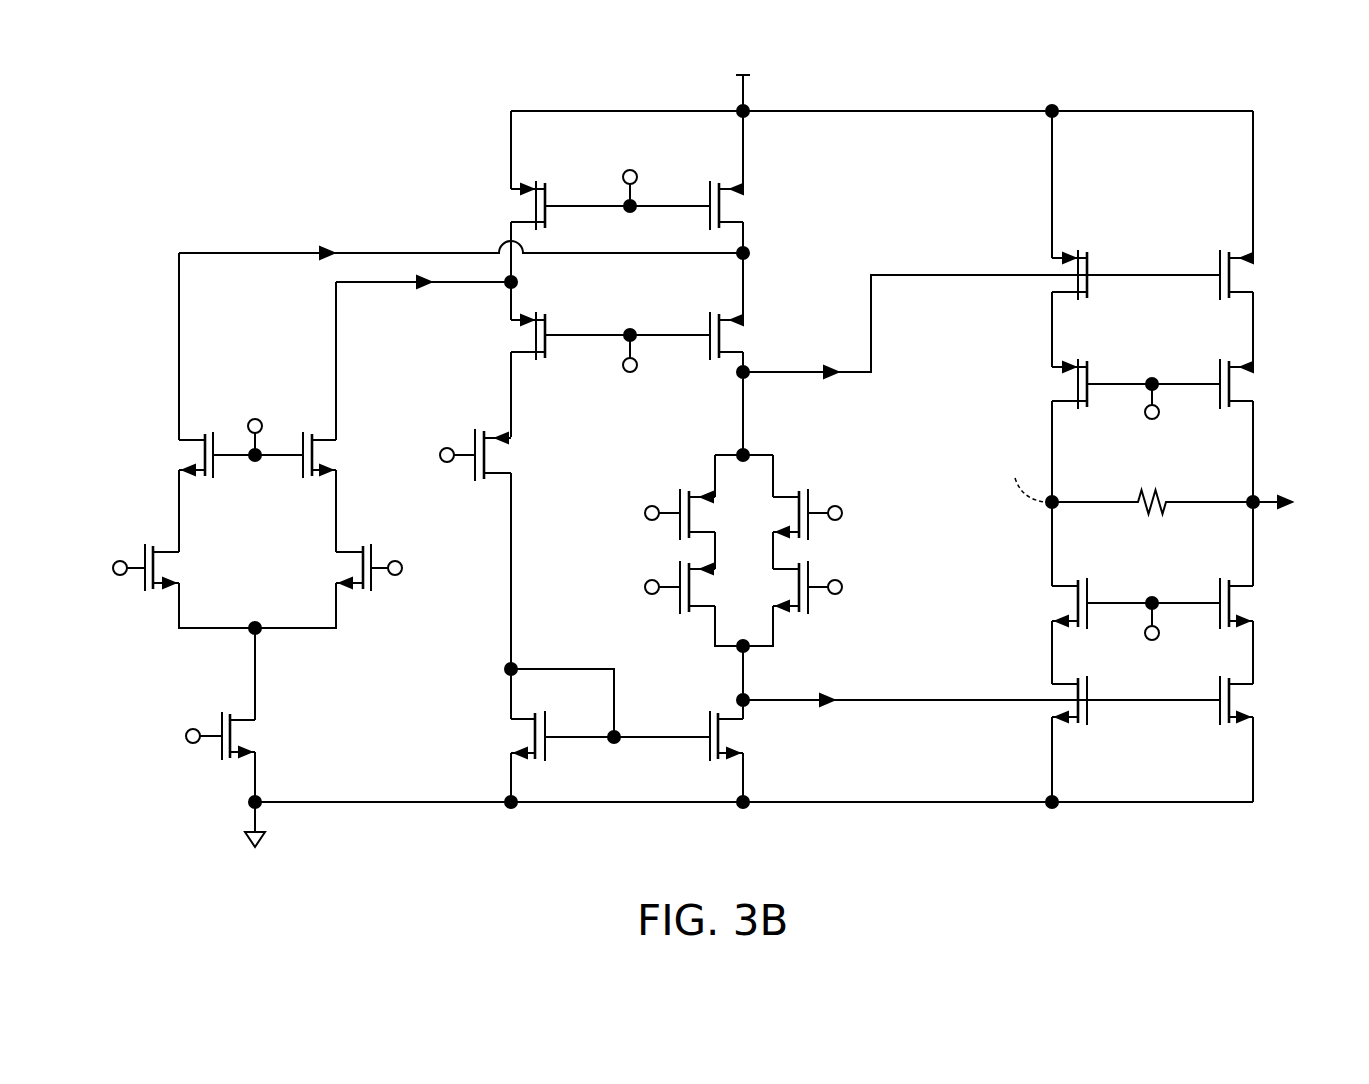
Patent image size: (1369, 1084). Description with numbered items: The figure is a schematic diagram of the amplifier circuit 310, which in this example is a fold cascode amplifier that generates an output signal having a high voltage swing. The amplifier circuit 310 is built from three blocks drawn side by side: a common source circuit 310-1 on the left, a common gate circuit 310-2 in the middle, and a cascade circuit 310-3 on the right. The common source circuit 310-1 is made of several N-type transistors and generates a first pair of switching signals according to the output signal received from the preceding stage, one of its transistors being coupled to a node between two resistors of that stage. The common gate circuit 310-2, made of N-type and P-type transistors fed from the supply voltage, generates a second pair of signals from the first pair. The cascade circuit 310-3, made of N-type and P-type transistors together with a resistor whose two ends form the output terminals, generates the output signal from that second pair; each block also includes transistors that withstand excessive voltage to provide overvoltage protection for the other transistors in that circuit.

The amplifier circuit 310 is at (400, 178).
The common source circuit 310-1 is at (368, 850).
The common gate circuit 310-2 is at (894, 827).
The cascade circuit 310-3 is at (1043, 825).